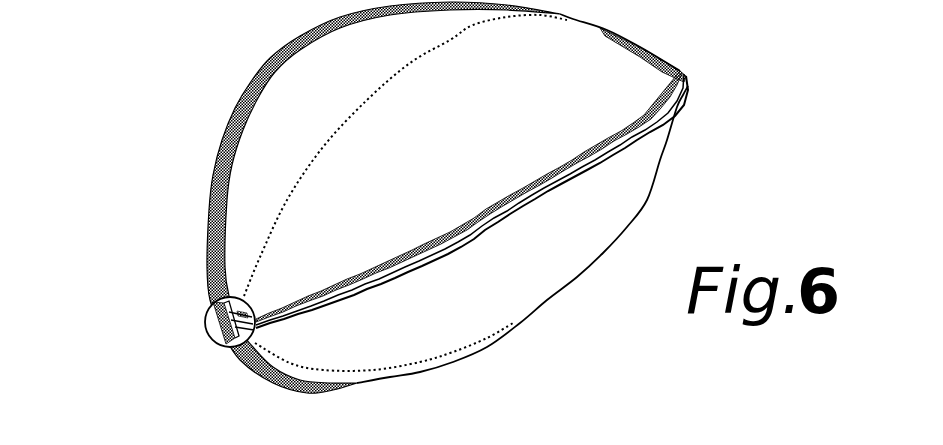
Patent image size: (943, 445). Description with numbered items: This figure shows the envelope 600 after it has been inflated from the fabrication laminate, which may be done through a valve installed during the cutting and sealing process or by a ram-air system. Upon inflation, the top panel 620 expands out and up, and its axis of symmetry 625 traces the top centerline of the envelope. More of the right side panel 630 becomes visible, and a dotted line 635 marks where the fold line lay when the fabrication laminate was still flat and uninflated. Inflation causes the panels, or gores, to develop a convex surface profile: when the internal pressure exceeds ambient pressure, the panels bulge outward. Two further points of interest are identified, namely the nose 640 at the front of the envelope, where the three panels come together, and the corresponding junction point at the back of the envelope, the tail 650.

The envelope 600 is at (158, 146).
The top panel 620 is at (528, 94).
The axis of symmetry 625 is at (325, 147).
The right side panel 630 is at (527, 284).
The former fold line location 635 is at (327, 370).
The nose 640 is at (211, 335).
The tail 650 is at (686, 61).